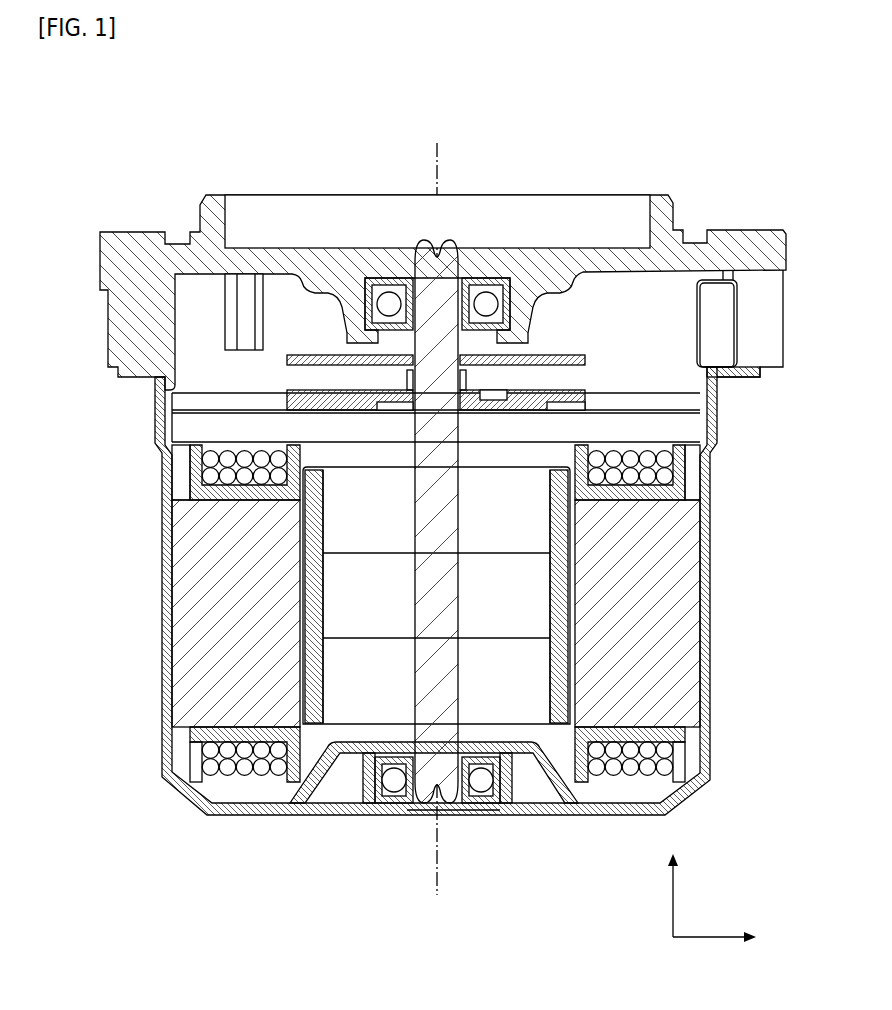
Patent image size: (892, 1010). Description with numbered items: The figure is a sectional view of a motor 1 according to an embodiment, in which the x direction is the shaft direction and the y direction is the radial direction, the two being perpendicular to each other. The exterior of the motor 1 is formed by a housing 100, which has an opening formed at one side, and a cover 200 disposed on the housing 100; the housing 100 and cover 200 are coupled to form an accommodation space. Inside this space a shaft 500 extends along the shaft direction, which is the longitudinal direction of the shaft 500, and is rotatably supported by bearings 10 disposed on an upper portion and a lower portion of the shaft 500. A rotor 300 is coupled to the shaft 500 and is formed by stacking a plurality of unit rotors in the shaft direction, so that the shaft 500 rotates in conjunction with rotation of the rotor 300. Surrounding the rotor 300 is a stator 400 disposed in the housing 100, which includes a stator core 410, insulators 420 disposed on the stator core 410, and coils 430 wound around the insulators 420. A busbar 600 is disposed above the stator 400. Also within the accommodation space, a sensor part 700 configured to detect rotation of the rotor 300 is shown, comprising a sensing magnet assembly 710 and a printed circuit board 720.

The motor 1 is at (95, 97).
The bearings 10 is at (505, 290).
The housing 100 is at (157, 398).
The cover 200 is at (99, 276).
The rotor 300 is at (356, 579).
The stator 400 is at (781, 470).
The stator core 410 is at (675, 545).
The insulators 420 is at (677, 492).
The coils 430 is at (646, 456).
The shaft 500 is at (438, 678).
The busbar 600 is at (168, 430).
The sensor part 700 is at (776, 387).
The sensing magnet assembly 710 is at (594, 379).
The printed circuit board (PCB) 720 is at (594, 356).